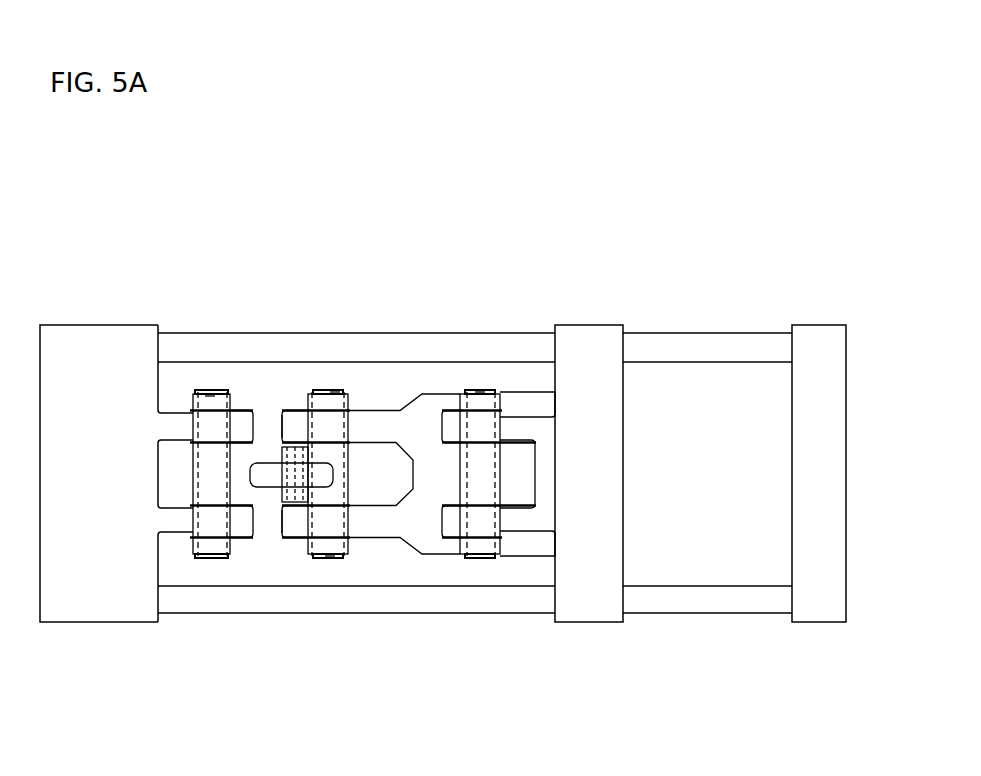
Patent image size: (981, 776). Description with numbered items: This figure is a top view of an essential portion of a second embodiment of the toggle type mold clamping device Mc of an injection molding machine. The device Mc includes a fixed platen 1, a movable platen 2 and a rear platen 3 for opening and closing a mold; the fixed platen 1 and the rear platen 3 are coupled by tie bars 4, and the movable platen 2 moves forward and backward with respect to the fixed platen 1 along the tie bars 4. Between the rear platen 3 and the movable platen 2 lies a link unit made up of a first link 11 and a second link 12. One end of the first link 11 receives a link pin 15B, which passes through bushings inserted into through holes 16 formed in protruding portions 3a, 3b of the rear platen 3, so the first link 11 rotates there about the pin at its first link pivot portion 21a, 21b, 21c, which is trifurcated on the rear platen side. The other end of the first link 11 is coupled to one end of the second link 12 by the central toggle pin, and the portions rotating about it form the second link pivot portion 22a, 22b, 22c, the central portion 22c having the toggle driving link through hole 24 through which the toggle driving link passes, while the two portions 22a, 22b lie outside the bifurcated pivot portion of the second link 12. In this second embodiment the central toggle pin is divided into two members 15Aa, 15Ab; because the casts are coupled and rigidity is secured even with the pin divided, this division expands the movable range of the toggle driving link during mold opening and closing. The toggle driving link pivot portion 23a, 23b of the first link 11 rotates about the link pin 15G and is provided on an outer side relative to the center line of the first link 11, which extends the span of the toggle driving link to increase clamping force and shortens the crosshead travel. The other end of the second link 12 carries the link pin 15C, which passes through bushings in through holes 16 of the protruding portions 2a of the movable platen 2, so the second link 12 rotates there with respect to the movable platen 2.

The mold clamping device Mc is at (561, 200).
The fixed platen 1 is at (825, 325).
The movable platen 2 is at (590, 325).
The protruding portions of the movable platen 2a is at (518, 425).
The rear platen 3 is at (100, 325).
The protruding portion of the rear platen 3a is at (180, 427).
The protruding portion of the rear platen 3b is at (178, 524).
The tie bars 4 is at (705, 333).
The first link 11 is at (265, 403).
The second link 12 is at (437, 400).
The divided member of central toggle pin 15Aa is at (335, 390).
The divided member of central toggle pin 15Ab is at (330, 550).
The link pin 15B is at (212, 398).
The link pin 15C is at (480, 389).
The link pin 15G is at (341, 392).
The through holes 16 is at (208, 427).
The first link pivot portion 21a is at (233, 390).
The first link pivot portion 21b is at (213, 547).
The first link pivot portion 21c is at (196, 463).
The second link pivot portion 22a is at (347, 400).
The second link pivot portion 22b is at (343, 556).
The second link pivot portion 22c is at (349, 466).
The toggle driving link pivot portion 23a is at (284, 400).
The toggle driving link pivot portion 23b is at (280, 505).
The toggle driving link through hole 24 is at (268, 473).